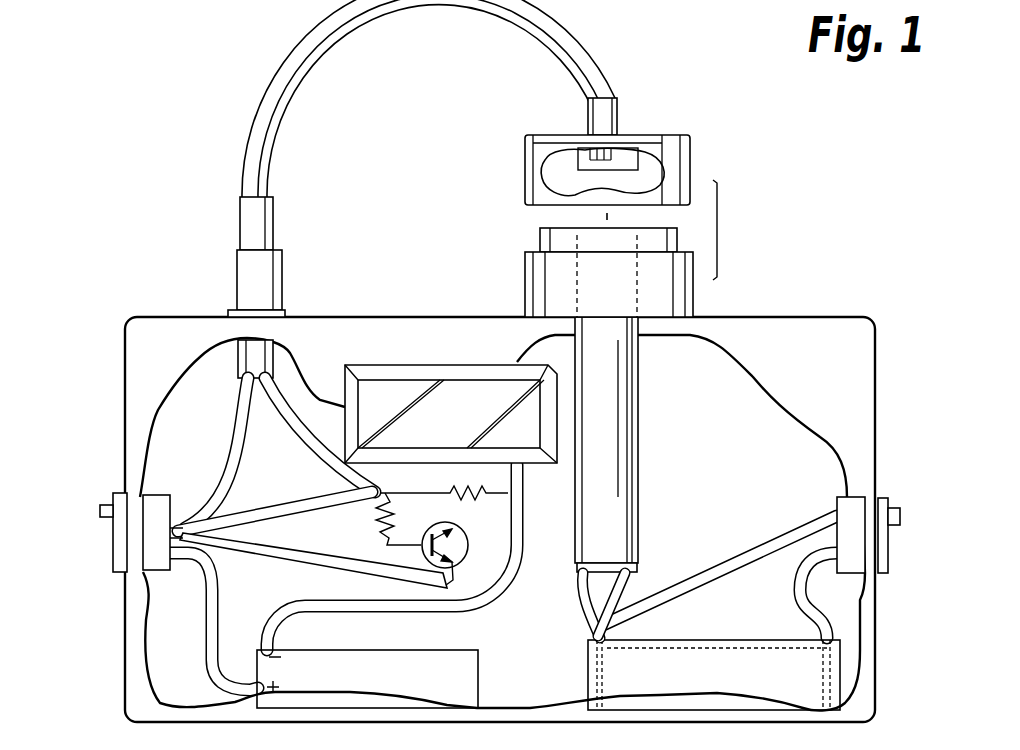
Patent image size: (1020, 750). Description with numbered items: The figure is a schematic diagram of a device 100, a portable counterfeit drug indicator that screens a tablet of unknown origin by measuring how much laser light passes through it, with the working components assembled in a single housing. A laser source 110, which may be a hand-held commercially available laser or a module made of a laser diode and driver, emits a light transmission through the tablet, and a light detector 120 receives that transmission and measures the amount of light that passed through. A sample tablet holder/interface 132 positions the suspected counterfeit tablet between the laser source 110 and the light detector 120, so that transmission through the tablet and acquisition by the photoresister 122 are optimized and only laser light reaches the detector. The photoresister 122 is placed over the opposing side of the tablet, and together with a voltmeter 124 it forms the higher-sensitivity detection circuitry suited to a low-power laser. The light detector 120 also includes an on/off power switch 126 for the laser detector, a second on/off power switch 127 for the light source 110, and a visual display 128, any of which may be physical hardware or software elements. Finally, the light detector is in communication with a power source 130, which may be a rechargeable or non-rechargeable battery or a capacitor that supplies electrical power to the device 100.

The device 100 is at (150, 118).
The laser source 110 is at (630, 435).
The light detector 120 is at (638, 152).
The photoresister 122 is at (572, 160).
The voltmeter 124 is at (451, 355).
The on/off power switch 126 is at (104, 507).
The on/off power switch 127 is at (900, 518).
The visual display 128 is at (446, 410).
The power source 130 is at (468, 682).
The sample tablet holder/interface 132 is at (730, 237).